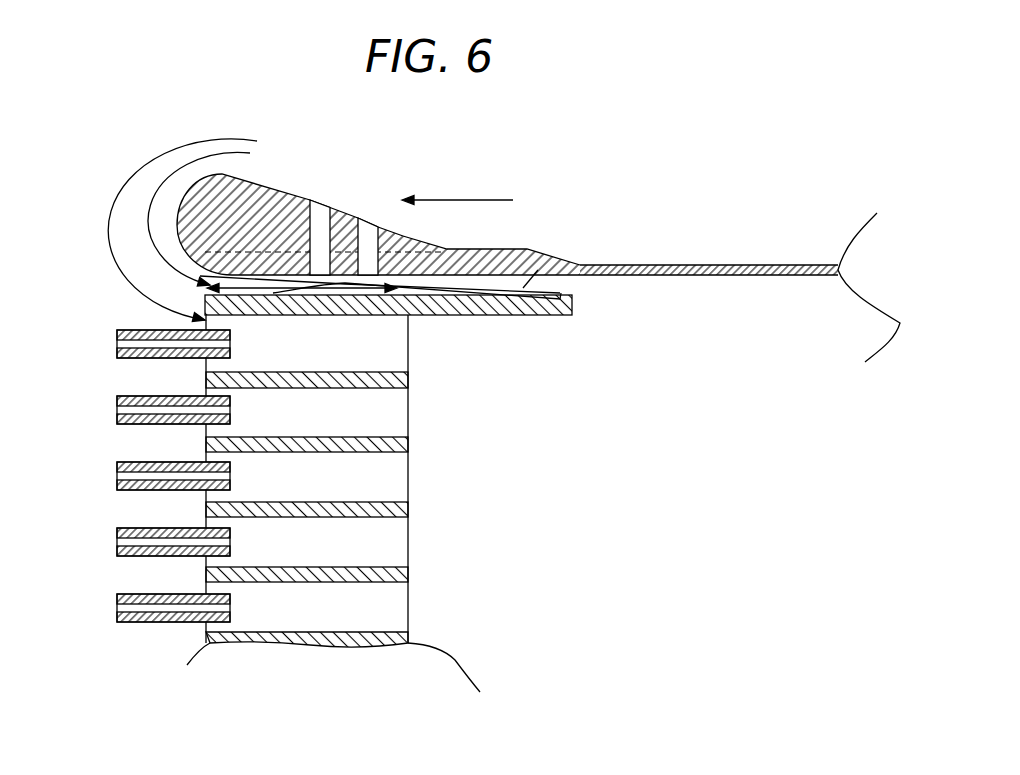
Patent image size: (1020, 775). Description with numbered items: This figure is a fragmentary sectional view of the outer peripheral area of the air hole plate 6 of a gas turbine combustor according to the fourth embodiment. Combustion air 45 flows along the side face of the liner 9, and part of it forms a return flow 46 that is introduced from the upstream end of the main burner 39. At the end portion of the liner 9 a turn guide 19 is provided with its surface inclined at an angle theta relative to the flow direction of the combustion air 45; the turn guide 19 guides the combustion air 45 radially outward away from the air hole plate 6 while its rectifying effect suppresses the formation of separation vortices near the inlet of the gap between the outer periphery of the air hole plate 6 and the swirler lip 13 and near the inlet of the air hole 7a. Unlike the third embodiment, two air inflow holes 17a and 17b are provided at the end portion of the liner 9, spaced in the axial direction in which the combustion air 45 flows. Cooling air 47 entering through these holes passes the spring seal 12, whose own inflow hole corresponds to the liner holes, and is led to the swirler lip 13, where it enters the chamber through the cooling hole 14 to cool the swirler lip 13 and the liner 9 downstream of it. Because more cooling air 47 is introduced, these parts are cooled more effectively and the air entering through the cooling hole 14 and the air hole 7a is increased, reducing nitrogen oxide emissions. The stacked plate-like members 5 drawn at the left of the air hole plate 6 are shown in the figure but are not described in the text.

The heat radiating fins 5 is at (120, 487).
The air hole plate 6 is at (408, 445).
The air hole 7a is at (320, 350).
The liner 9 is at (688, 266).
The spring seal 12 is at (552, 255).
The swirler lip 13 is at (573, 314).
The cooling hole 14 is at (500, 290).
The air inflow hole 17a is at (318, 198).
The air inflow hole 17b is at (375, 218).
The turn guide 19 is at (246, 215).
The main burner 39 is at (408, 510).
The combustion air 45 is at (517, 200).
The return flow 46 is at (140, 222).
The cooling air 47 is at (340, 284).